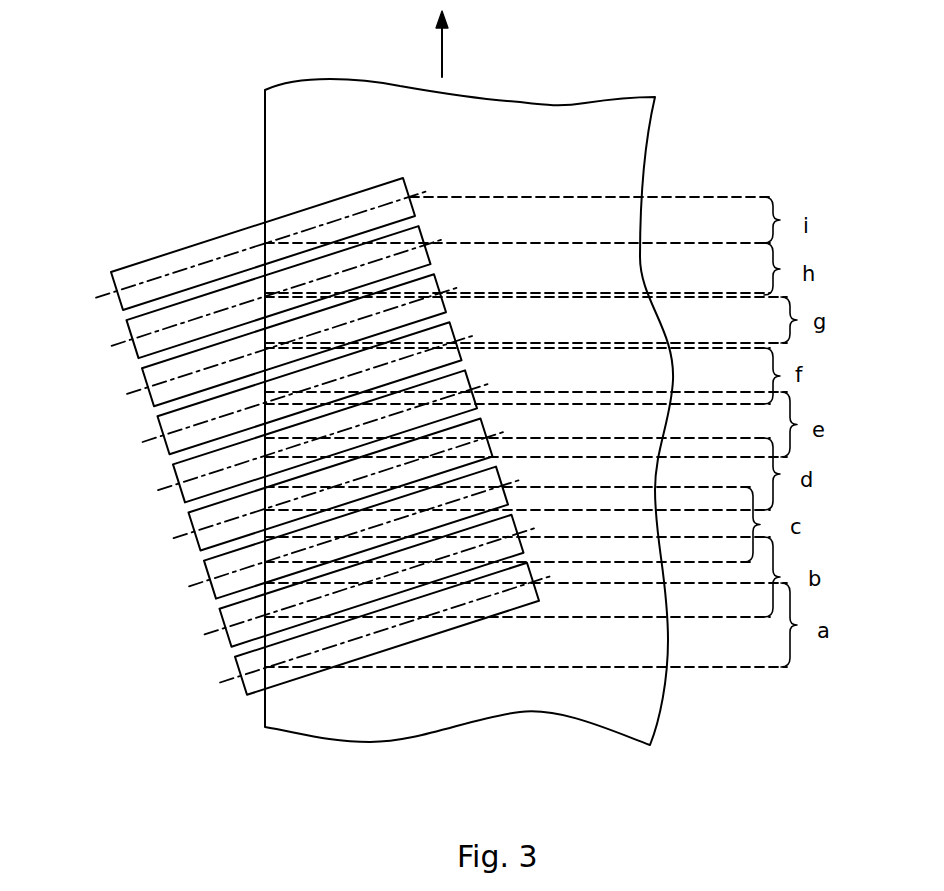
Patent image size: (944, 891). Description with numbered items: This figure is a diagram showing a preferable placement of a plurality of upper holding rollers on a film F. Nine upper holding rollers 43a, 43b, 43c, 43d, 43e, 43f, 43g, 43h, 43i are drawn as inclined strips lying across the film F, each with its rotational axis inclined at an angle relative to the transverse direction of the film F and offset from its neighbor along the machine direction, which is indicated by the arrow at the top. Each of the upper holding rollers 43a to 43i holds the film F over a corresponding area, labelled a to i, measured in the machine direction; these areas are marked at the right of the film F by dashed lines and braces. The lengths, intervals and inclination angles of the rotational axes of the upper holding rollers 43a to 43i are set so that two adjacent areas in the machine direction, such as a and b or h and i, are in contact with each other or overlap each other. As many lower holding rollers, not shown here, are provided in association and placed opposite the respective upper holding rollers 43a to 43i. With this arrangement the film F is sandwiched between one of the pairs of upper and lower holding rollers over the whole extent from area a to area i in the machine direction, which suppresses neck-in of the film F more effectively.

The film F is at (498, 117).
The upper holding roller 43a is at (255, 683).
The upper holding roller 43b is at (243, 632).
The upper holding roller 43c is at (225, 582).
The upper holding roller 43d is at (210, 534).
The upper holding roller 43e is at (194, 486).
The upper holding roller 43f is at (178, 437).
The upper holding roller 43g is at (162, 389).
The upper holding roller 43h is at (147, 341).
The upper holding roller 43i is at (153, 270).